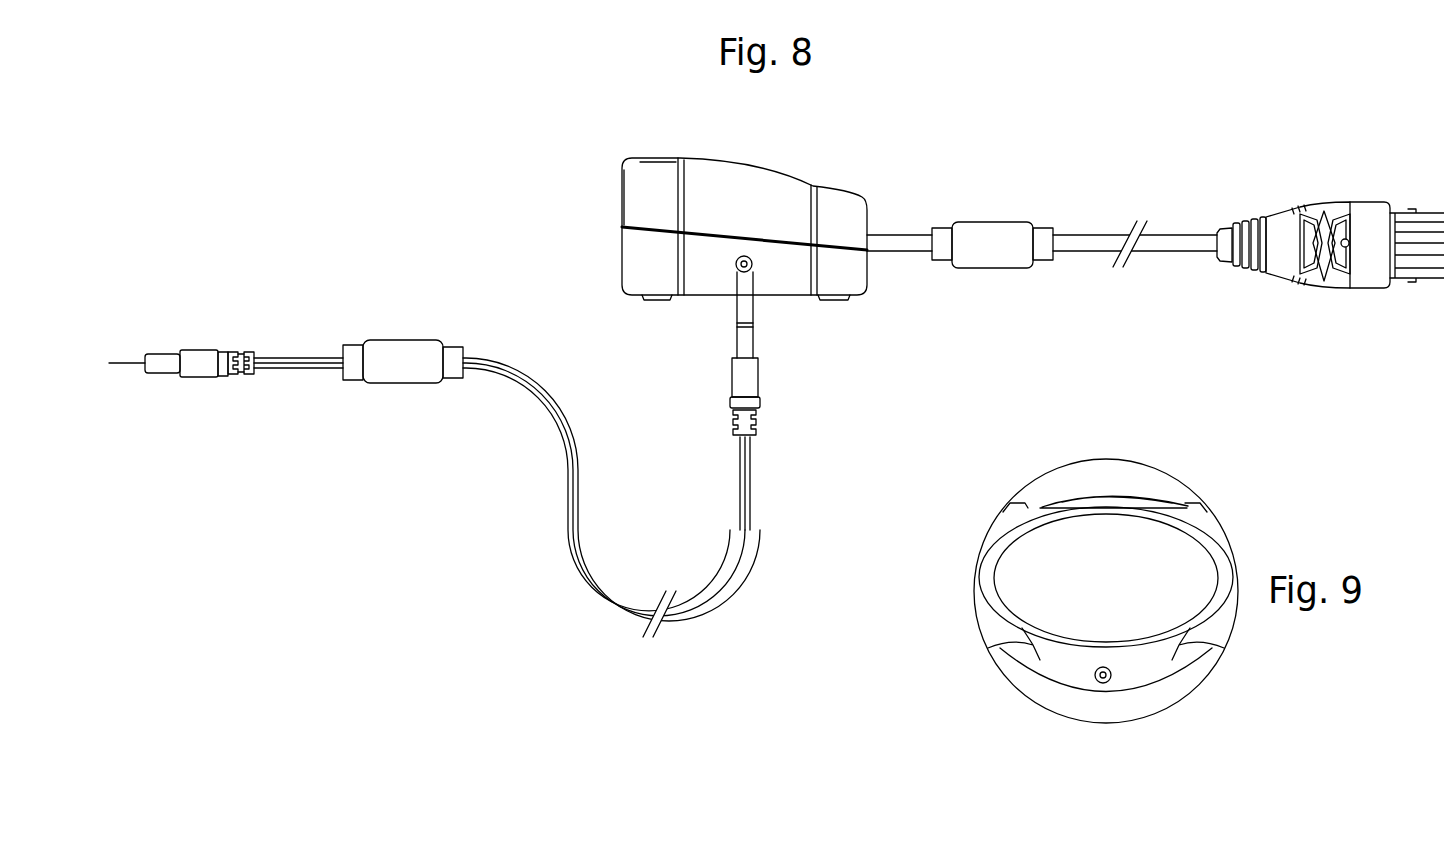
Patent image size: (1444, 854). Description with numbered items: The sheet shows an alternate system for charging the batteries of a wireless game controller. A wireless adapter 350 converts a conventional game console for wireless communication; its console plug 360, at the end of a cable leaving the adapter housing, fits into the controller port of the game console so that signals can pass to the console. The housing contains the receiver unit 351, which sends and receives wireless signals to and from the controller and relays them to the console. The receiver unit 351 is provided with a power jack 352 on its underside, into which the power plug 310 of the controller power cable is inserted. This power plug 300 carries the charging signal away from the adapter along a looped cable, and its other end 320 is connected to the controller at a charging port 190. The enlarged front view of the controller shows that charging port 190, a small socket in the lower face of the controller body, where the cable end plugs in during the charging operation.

In FIG. 8, the wireless adapter 350 is at (833, 152).
In FIG. 8, the receiver unit 351 is at (646, 191).
In FIG. 8, the power jack 352 is at (752, 267).
In FIG. 8, the power plug 310 is at (741, 382).
In FIG. 8, the other end of the power plug 320 is at (201, 368).
In FIG. 8, the power plug 300 is at (570, 530).
In FIG. 8, the console plug 360 is at (1285, 256).
In FIG. 9, the charging port 190 is at (1100, 684).